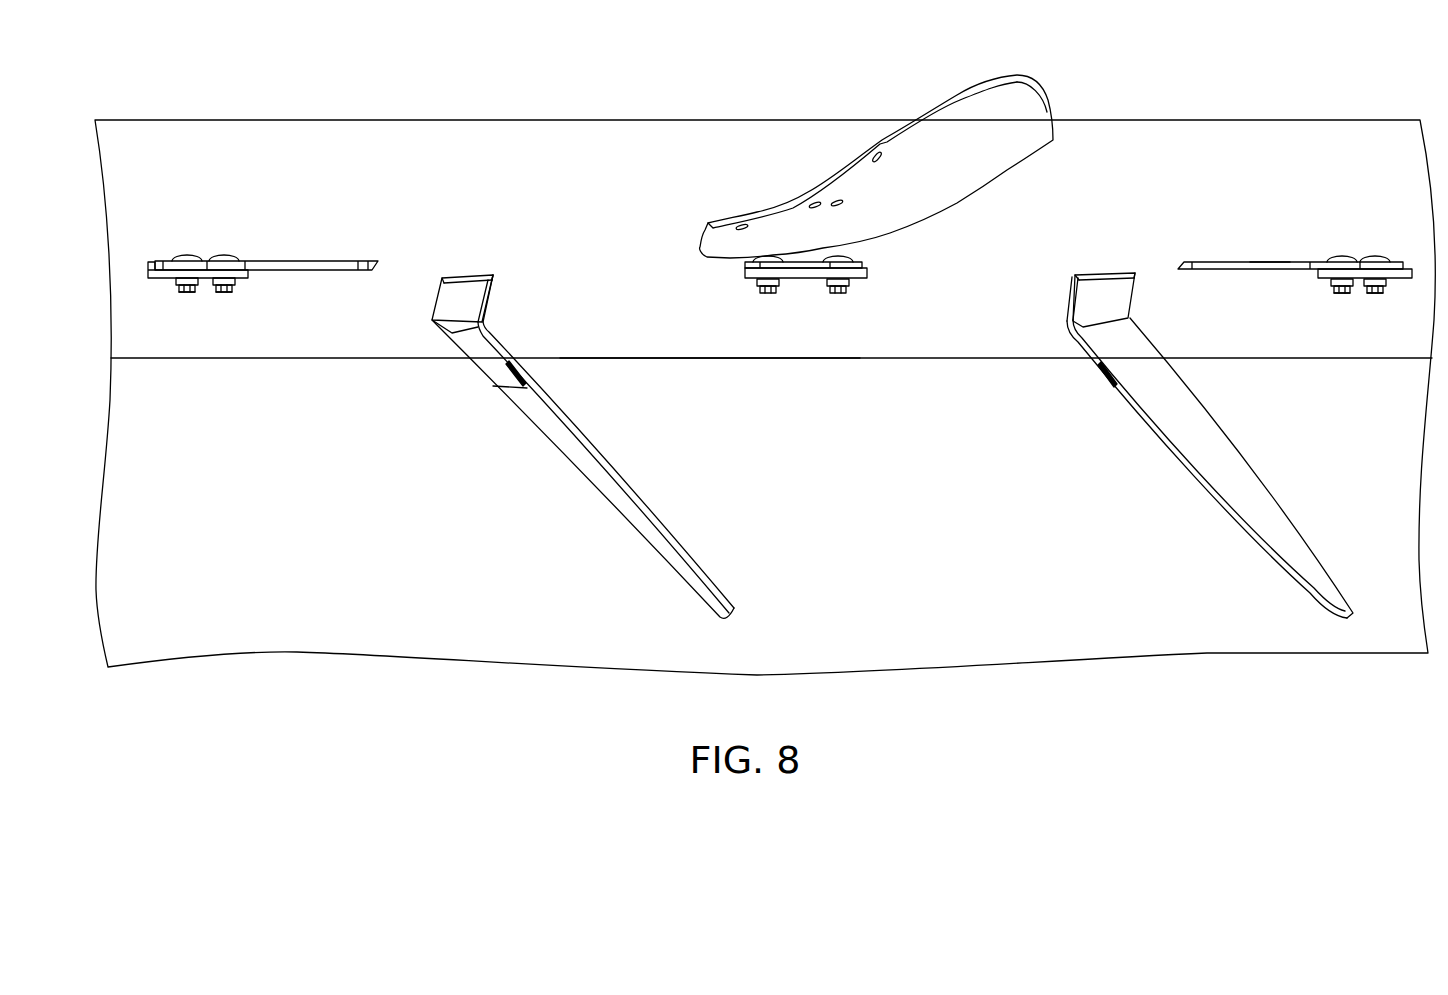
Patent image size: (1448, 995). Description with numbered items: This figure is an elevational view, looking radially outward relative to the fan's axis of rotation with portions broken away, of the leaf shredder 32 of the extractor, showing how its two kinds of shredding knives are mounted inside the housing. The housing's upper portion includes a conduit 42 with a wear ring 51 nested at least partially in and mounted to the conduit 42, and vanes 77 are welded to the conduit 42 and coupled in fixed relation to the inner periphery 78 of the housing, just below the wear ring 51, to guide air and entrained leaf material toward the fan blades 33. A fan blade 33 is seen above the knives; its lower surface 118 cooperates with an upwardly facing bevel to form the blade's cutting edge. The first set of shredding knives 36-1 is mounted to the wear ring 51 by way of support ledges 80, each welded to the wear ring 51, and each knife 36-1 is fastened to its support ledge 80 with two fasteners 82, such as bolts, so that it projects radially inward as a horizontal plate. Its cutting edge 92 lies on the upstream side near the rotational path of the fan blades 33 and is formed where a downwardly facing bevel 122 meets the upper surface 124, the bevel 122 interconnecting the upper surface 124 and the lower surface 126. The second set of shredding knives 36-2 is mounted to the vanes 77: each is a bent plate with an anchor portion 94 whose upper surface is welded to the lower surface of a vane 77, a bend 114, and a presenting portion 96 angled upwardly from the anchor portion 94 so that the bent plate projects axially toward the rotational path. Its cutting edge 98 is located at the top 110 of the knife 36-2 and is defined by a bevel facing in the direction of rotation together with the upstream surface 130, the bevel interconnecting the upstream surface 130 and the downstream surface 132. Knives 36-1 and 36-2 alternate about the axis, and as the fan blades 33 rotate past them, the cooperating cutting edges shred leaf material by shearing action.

The leaf shredder 32 is at (265, 136).
The fan blade 33 is at (887, 185).
The first set of shredding knives 36-1 is at (744, 238).
The second set of shredding knives 36-2 is at (847, 397).
The conduit 42 is at (707, 378).
The wear ring 51 is at (642, 338).
The vane 77 is at (565, 452).
The inner periphery 78 is at (1147, 135).
The support ledge 80 is at (152, 274).
The fastener 82 is at (224, 294).
The cutting edge 92 is at (1322, 262).
The anchor portion 94 is at (498, 350).
The presenting portion 96 is at (497, 297).
The cutting edge 98 is at (452, 277).
The top 110 is at (486, 275).
The bend 114 is at (440, 330).
The lower surface 118 is at (985, 162).
The bevel 122 is at (1282, 262).
The upper surface 124 is at (166, 261).
The lower surface 126 is at (288, 270).
The upstream surface 130 is at (1078, 295).
The downstream surface 132 is at (440, 297).